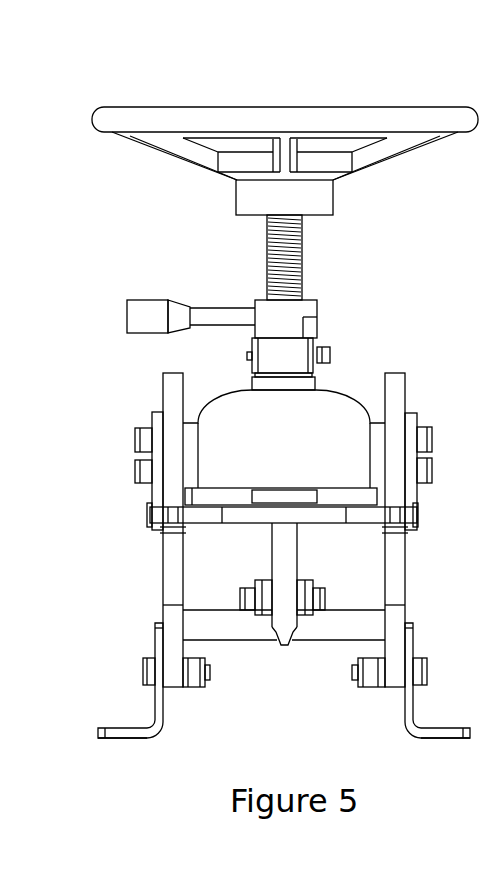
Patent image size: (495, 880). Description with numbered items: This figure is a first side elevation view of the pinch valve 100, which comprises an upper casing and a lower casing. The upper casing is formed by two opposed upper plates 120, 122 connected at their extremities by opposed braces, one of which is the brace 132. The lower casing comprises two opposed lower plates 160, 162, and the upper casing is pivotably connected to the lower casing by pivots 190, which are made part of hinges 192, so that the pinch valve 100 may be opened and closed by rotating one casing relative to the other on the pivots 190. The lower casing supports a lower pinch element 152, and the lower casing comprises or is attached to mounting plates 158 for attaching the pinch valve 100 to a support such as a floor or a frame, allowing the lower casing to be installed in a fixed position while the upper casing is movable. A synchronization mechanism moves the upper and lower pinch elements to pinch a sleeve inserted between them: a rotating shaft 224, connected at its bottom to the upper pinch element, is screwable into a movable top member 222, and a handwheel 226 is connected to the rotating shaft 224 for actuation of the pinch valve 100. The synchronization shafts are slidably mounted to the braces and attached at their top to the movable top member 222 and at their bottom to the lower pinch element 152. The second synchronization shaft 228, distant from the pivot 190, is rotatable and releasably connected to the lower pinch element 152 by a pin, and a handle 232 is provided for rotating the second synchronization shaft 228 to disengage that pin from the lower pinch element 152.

The pinch valve 100 is at (423, 260).
The upper plate 120 is at (397, 390).
The upper plate 122 is at (172, 390).
The brace 132 is at (317, 423).
The lower pinch element 152 is at (337, 628).
The mounting plate 158 is at (162, 717).
The lower plate 160 is at (397, 592).
The lower plate 162 is at (175, 623).
The pivot 190 is at (150, 513).
The hinge 192 is at (153, 422).
The movable top member 222 is at (282, 362).
The rotating shaft 224 is at (302, 246).
The handwheel 226 is at (117, 125).
The second synchronization shaft 228 is at (288, 580).
The handle 232 is at (147, 318).